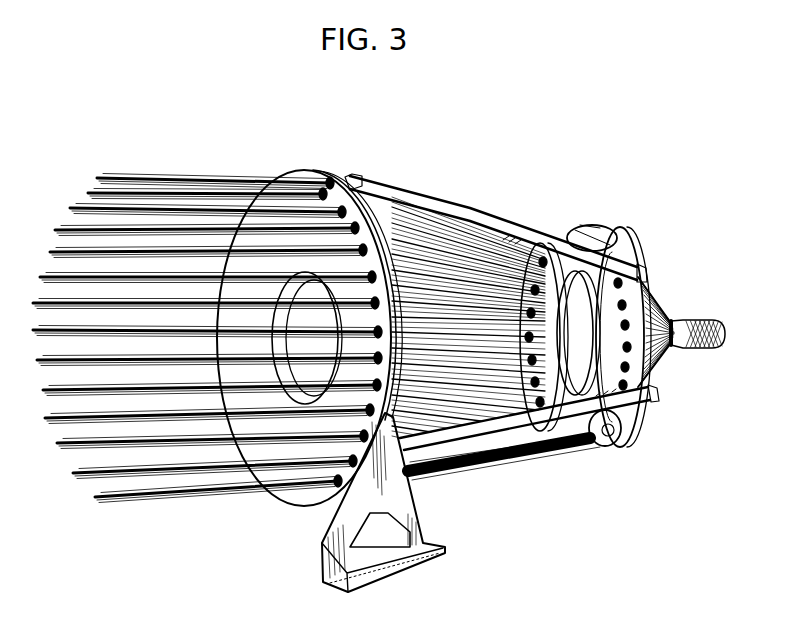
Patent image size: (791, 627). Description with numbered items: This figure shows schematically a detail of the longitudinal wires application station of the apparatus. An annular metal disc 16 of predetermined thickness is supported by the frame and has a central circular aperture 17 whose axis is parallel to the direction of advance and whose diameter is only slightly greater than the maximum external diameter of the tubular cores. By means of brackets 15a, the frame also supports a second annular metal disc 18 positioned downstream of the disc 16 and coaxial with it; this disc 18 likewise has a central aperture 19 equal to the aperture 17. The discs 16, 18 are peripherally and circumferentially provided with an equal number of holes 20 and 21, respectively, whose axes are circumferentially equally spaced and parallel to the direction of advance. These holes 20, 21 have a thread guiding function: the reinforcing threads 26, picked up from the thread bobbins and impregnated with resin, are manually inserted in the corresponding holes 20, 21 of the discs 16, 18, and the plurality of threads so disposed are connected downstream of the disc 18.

The brackets 15a is at (384, 184).
The annular metal disc 16 is at (292, 220).
The central circular aperture 17 is at (312, 350).
The second annular metal disc 18 is at (630, 292).
The central aperture 19 is at (590, 450).
The holes 20 is at (315, 176).
The holes 21 is at (593, 225).
The reinforcing threads 26 is at (473, 283).